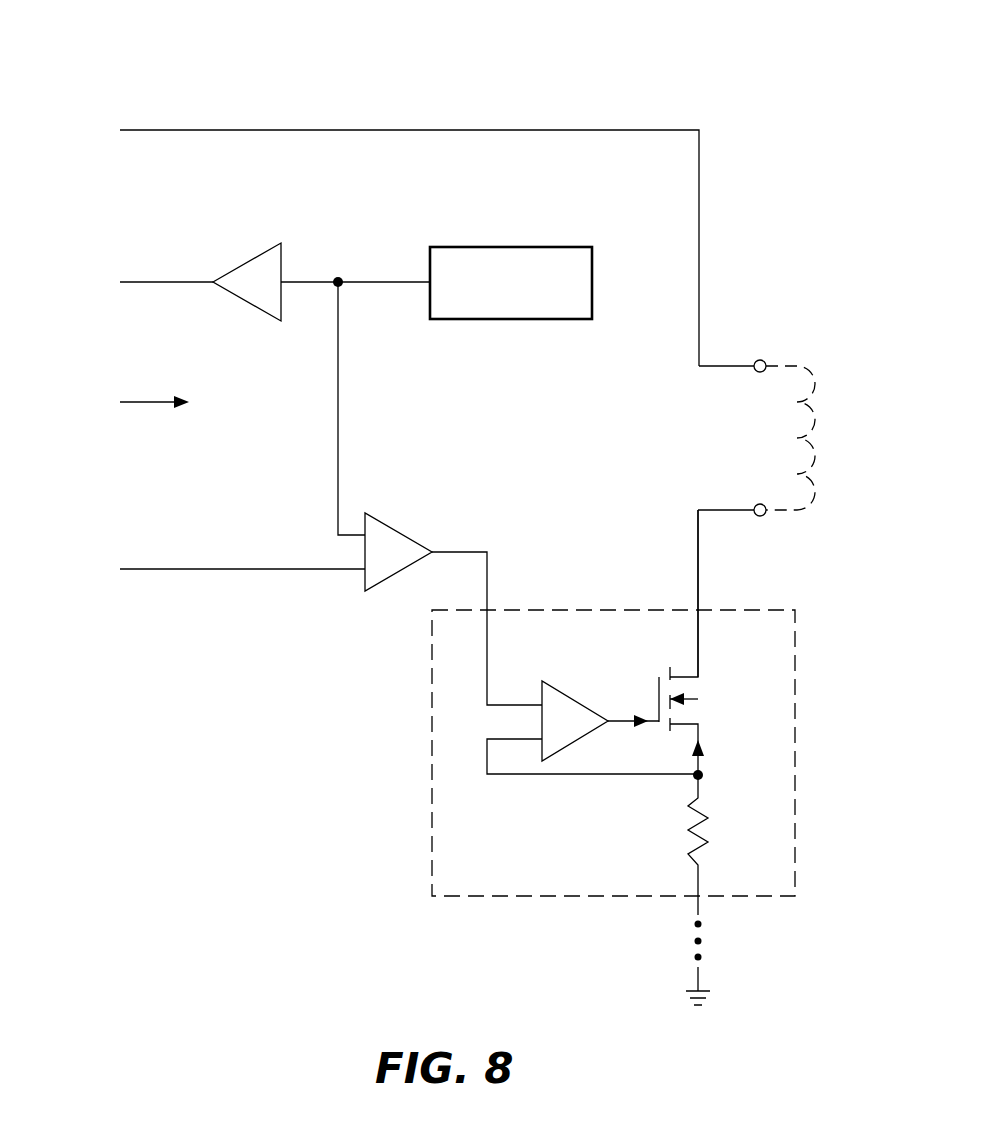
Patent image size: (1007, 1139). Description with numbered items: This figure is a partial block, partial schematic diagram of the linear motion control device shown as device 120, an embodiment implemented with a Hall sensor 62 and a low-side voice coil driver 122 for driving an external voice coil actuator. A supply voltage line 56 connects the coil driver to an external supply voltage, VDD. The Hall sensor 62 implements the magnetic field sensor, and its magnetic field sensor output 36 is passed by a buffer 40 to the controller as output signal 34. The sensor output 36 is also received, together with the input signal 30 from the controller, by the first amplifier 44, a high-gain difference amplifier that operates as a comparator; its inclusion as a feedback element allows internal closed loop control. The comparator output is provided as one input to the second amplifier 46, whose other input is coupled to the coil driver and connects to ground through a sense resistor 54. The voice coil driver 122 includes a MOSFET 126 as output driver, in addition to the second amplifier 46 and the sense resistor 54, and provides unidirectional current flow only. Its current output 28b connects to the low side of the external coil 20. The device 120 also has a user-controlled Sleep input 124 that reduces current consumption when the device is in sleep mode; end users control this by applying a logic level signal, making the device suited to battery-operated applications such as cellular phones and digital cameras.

The device 120 is at (608, 52).
The supply voltage line 56 is at (312, 130).
The output signal 34 is at (153, 282).
The buffer 40 is at (272, 295).
The magnetic field sensor output 36 is at (392, 282).
The Hall sensor 62 is at (497, 312).
The Sleep input 124 is at (150, 402).
The input signal 30 is at (158, 569).
The first amplifier 44 is at (408, 564).
The voice coil driver 122 is at (776, 649).
The second amplifier 46 is at (583, 733).
The MOSFET 126 is at (638, 688).
The sense resistor 54 is at (706, 828).
The coil 20 is at (825, 420).
The output 28b is at (699, 566).